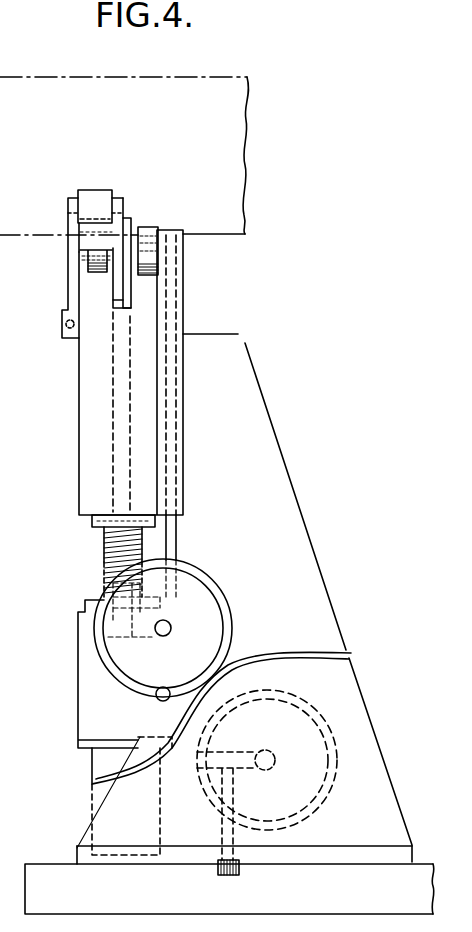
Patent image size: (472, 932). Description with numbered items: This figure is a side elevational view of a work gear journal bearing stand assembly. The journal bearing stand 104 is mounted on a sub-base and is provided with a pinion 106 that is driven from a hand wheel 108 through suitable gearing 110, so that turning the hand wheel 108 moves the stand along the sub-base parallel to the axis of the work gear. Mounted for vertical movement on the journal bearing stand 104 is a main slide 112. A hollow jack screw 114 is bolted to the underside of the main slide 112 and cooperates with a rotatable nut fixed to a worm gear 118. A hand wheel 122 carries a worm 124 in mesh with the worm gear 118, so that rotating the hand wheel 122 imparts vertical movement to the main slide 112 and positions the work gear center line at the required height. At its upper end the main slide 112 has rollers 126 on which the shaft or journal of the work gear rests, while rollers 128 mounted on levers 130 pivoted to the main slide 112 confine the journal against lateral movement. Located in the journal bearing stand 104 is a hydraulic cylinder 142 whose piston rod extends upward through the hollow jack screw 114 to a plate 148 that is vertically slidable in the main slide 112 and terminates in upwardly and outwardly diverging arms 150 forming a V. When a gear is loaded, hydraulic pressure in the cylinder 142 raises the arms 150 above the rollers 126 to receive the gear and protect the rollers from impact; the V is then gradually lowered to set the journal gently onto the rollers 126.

The journal bearing stand 104 is at (306, 521).
The pinion 106 is at (215, 876).
The hand wheel 108 is at (318, 808).
The gearing 110 is at (257, 747).
The main slide 112 is at (92, 432).
The hollow jack screw 114 is at (105, 561).
The worm gear 118 is at (97, 637).
The hand wheel 122 is at (230, 606).
The worm 124 is at (167, 636).
The rollers 126 is at (152, 228).
The rollers 128 is at (93, 189).
The levers 130 is at (68, 200).
The hydraulic cylinder 142 is at (90, 803).
The plate 148 is at (112, 384).
The arms 150 is at (129, 218).